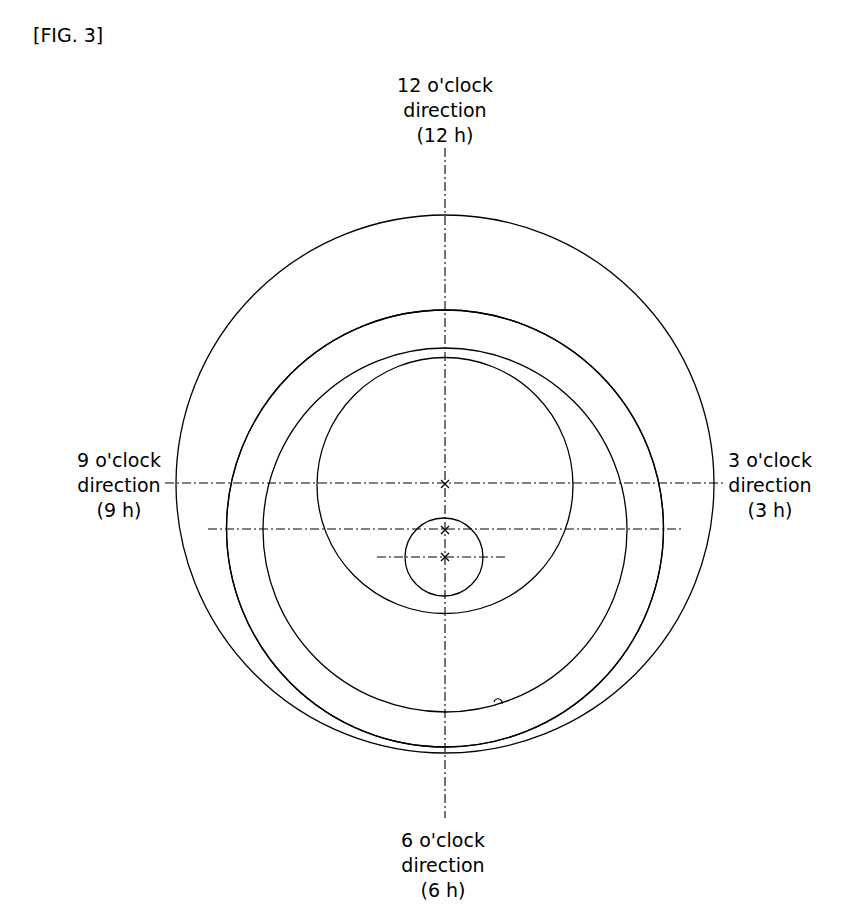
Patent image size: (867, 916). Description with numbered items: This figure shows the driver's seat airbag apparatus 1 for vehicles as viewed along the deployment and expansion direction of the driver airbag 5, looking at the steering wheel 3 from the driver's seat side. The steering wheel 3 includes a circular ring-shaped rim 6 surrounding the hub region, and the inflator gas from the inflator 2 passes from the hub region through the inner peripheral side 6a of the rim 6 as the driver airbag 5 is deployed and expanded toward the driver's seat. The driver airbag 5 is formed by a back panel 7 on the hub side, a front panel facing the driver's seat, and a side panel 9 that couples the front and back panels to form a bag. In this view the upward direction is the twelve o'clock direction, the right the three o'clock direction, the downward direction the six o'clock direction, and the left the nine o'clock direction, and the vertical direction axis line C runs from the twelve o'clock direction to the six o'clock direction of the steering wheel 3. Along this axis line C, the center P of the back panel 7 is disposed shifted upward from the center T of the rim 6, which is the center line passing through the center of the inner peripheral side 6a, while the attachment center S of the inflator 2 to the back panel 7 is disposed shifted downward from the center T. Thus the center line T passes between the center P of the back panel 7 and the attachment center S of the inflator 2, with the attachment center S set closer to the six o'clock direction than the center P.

The driver's seat airbag apparatus 1 is at (622, 183).
The inflator 2 is at (475, 586).
The steering wheel 3 is at (626, 371).
The driver airbag 5 is at (230, 293).
The rim 6 is at (595, 686).
The inner peripheral side 6a is at (502, 706).
The back panel 7 is at (578, 462).
The side panel 9 is at (614, 300).
The vertical direction axis line C is at (448, 181).
The center of the back panel P is at (447, 481).
The center line T is at (443, 528).
The attachment center S is at (442, 560).